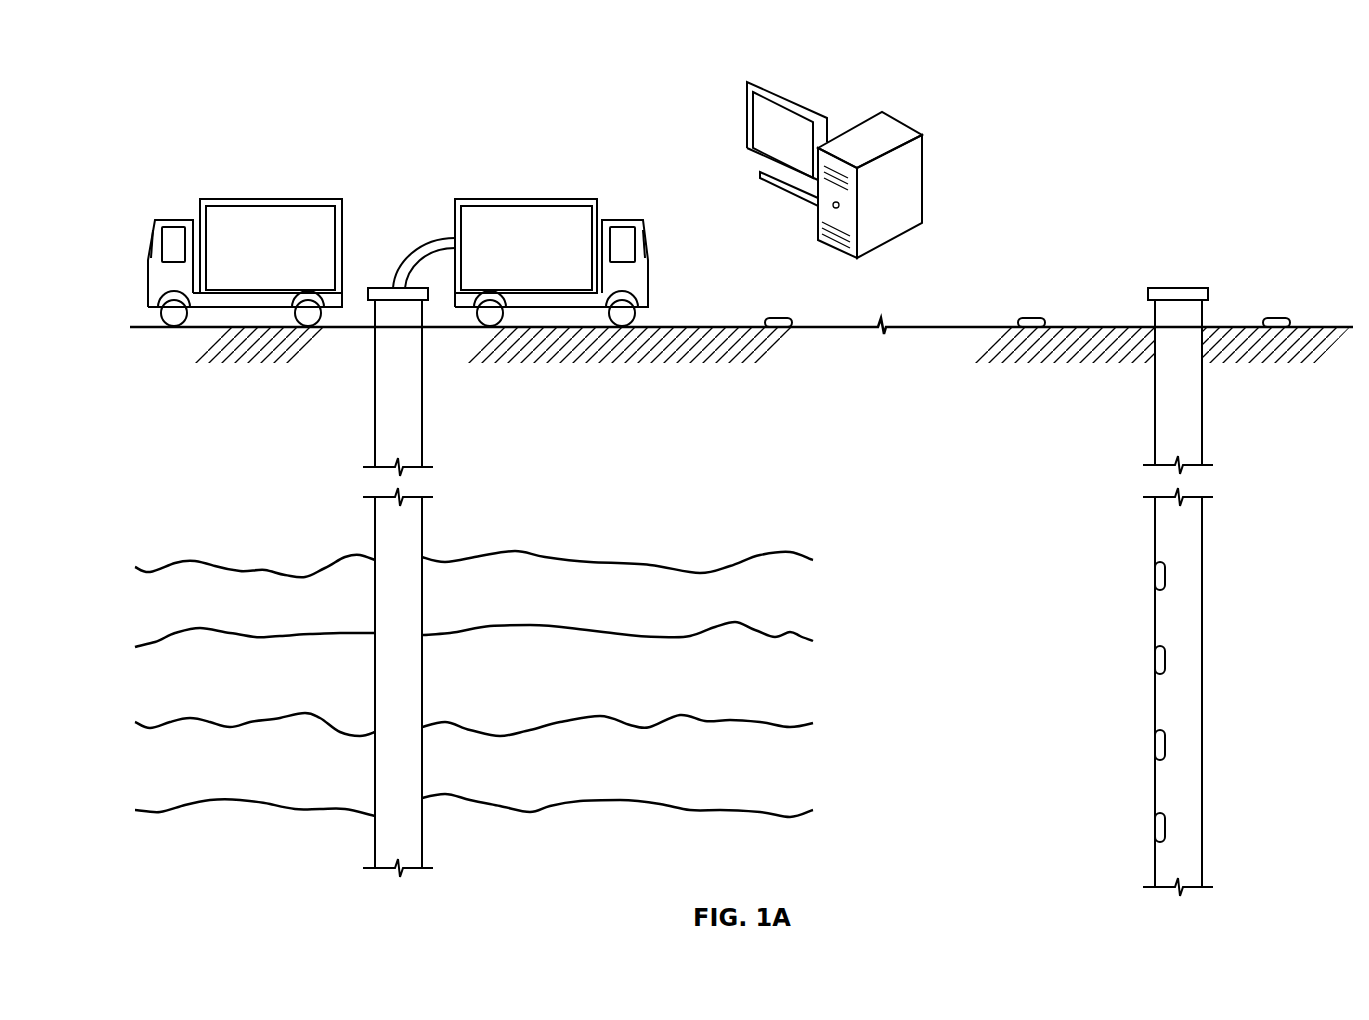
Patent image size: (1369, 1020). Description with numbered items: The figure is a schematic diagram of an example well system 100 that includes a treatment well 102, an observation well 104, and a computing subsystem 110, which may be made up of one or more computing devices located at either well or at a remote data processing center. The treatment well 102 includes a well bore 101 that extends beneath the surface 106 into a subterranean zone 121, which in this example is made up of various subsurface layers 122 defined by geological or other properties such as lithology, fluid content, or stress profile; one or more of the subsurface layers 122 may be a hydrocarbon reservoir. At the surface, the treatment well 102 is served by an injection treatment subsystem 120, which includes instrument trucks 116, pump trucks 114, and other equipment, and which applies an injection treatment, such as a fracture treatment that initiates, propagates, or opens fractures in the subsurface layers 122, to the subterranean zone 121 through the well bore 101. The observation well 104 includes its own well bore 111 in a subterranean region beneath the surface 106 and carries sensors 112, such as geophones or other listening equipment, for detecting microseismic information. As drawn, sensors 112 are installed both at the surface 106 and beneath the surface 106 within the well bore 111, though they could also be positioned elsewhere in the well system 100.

The well system 100 is at (223, 68).
The well bore 101 is at (392, 427).
The treatment well 102 is at (340, 163).
The observation well 104 is at (1182, 207).
The surface 106 is at (940, 327).
The computing subsystem 110 is at (902, 122).
The well bore 111 is at (1182, 430).
The sensors 112 is at (778, 318).
The pump trucks 114 is at (507, 257).
The instrument trucks 116 is at (247, 257).
The injection treatment subsystem 120 is at (417, 182).
The subterranean zone 121 is at (823, 503).
The subsurface layers 122 is at (579, 608).